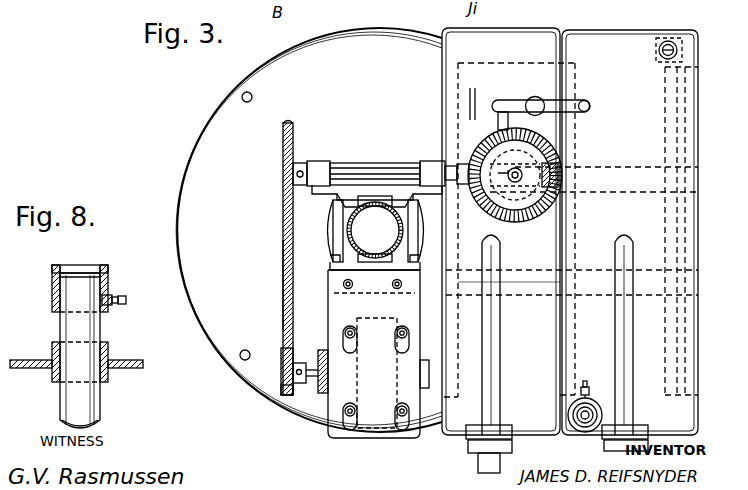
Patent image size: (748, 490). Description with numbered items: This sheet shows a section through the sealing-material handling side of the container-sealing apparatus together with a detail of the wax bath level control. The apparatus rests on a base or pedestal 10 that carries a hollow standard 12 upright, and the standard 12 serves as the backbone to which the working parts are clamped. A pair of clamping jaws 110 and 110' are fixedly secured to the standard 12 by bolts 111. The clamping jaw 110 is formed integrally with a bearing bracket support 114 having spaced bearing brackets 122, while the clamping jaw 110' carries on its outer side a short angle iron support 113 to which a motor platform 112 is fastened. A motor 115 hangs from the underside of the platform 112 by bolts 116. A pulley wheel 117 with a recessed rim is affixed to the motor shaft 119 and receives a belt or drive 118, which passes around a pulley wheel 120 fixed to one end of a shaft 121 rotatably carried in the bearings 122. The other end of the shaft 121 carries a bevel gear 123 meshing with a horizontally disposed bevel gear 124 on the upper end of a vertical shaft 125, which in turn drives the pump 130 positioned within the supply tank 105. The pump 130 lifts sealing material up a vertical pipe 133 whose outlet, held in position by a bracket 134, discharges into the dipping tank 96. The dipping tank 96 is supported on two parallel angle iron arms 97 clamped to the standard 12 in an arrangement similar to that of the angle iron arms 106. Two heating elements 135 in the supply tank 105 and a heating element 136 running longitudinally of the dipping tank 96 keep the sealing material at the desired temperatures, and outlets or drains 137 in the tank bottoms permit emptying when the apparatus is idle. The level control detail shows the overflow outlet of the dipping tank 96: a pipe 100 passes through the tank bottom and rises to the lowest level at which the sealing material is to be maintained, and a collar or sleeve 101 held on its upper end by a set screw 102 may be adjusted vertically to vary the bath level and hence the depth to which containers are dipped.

In FIG. 3, the base or pedestal 10 is at (309, 230).
In FIG. 3, the hollow standard 12 is at (376, 202).
In FIG. 3, the tank 96 is at (630, 232).
In FIG. 8, the tank 96 is at (140, 360).
In FIG. 3, the angle iron arms 97 is at (630, 170).
In FIG. 3, the pipe 100 is at (582, 428).
In FIG. 8, the pipe 100 is at (98, 405).
In FIG. 3, the collar or sleeve 101 is at (568, 414).
In FIG. 8, the collar or sleeve 101 is at (108, 272).
In FIG. 3, the set screw 102 is at (586, 386).
In FIG. 8, the set screw 102 is at (127, 302).
In FIG. 3, the supply tank 105 is at (508, 231).
In FIG. 3, the angle iron arms 106 is at (512, 293).
In FIG. 3, the clamping jaw 110 is at (371, 201).
In FIG. 3, the clamping jaw 110' is at (359, 258).
In FIG. 3, the bolts 111 is at (333, 231).
In FIG. 3, the motor platform 112 is at (328, 311).
In FIG. 3, the short angle iron support 113 is at (370, 292).
In FIG. 3, the bearing bracket support 114 is at (372, 163).
In FIG. 3, the motor 115 is at (371, 438).
In FIG. 3, the bolts 116 is at (395, 337).
In FIG. 3, the pulley wheel 117 is at (282, 358).
In FIG. 3, the belt or drive 118 is at (283, 279).
In FIG. 3, the motor shaft 119 is at (308, 366).
In FIG. 3, the pulley wheel 120 is at (283, 160).
In FIG. 3, the shaft 121 is at (345, 170).
In FIG. 3, the bearing brackets 122 is at (316, 162).
In FIG. 3, the bevel gear 123 is at (465, 162).
In FIG. 3, the bevel gear 124 is at (523, 221).
In FIG. 3, the shaft 125 is at (520, 156).
In FIG. 3, the pump 130 is at (552, 158).
In FIG. 3, the pipe 133 is at (519, 101).
In FIG. 3, the bracket 134 is at (536, 97).
In FIG. 3, the heating elements 135 is at (500, 329).
In FIG. 3, the heating element 136 is at (617, 325).
In FIG. 3, the outlets or drains 137 is at (657, 51).